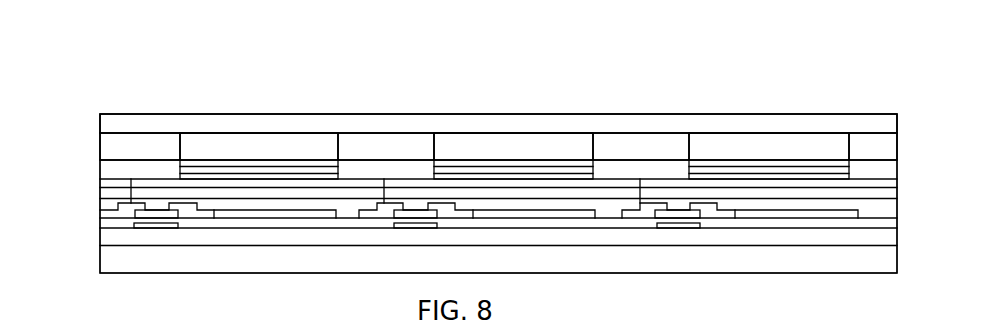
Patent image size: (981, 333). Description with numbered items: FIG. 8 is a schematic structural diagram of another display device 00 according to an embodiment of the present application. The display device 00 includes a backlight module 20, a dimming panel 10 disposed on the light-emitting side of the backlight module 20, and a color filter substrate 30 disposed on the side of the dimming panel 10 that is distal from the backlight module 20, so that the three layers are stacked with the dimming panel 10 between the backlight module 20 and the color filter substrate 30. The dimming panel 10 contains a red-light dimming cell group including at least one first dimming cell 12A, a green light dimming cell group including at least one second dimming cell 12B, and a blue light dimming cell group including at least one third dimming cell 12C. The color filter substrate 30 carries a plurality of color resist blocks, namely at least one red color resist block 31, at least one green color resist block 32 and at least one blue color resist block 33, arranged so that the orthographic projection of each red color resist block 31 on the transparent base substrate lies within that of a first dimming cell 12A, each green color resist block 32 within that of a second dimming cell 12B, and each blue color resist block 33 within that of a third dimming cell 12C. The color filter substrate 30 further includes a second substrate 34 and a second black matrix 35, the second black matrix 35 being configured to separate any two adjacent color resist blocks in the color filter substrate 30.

The display device 00 is at (486, 40).
The dimming panel 10 is at (83, 158).
The backlight module 20 is at (92, 262).
The color filter substrate 30 is at (83, 112).
The red color resist block 31 is at (268, 129).
The green color resist block 32 is at (508, 129).
The blue color resist block 33 is at (749, 129).
The second substrate 34 is at (162, 111).
The second black matrix 35 is at (127, 124).
The first dimming cell 12A is at (202, 152).
The second dimming cell 12B is at (453, 152).
The third dimming cell 12C is at (702, 152).